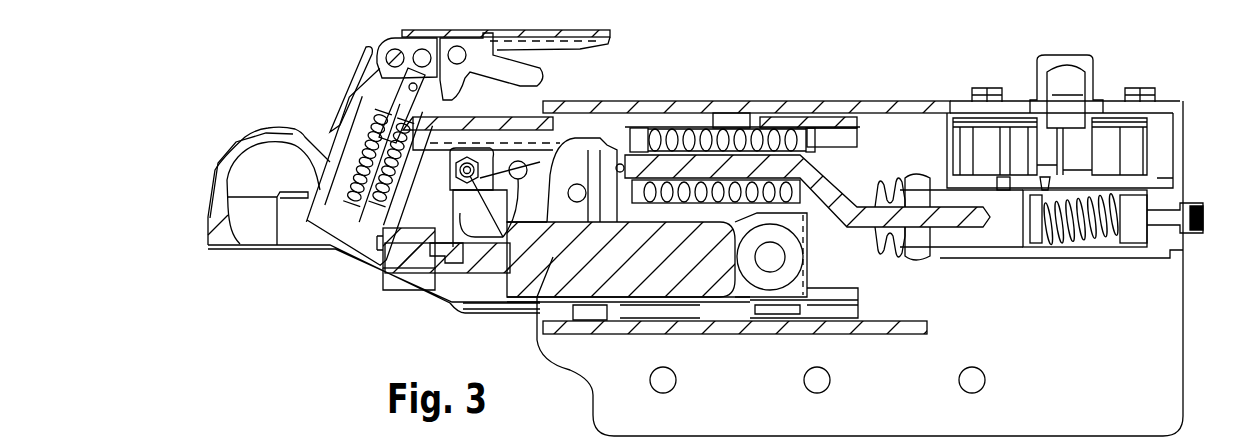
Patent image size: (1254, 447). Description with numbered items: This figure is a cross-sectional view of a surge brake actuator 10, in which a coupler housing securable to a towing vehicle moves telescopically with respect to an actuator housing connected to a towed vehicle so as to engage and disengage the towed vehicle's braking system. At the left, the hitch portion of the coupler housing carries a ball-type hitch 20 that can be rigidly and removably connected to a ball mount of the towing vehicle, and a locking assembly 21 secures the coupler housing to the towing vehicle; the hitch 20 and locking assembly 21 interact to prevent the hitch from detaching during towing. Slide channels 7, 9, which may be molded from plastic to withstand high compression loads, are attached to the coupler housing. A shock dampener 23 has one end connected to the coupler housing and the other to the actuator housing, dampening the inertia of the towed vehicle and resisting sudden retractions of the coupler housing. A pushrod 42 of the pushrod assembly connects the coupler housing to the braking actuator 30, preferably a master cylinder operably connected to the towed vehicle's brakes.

The surge brake actuator 10 is at (770, 80).
The locking assembly 21 is at (476, 29).
The slide channel 7 is at (684, 128).
The pushrod 42 is at (833, 187).
The braking actuator 30 is at (1067, 235).
The ball-type hitch 20 is at (263, 252).
The shock dampener 23 is at (545, 322).
The slide channel 9 is at (610, 317).